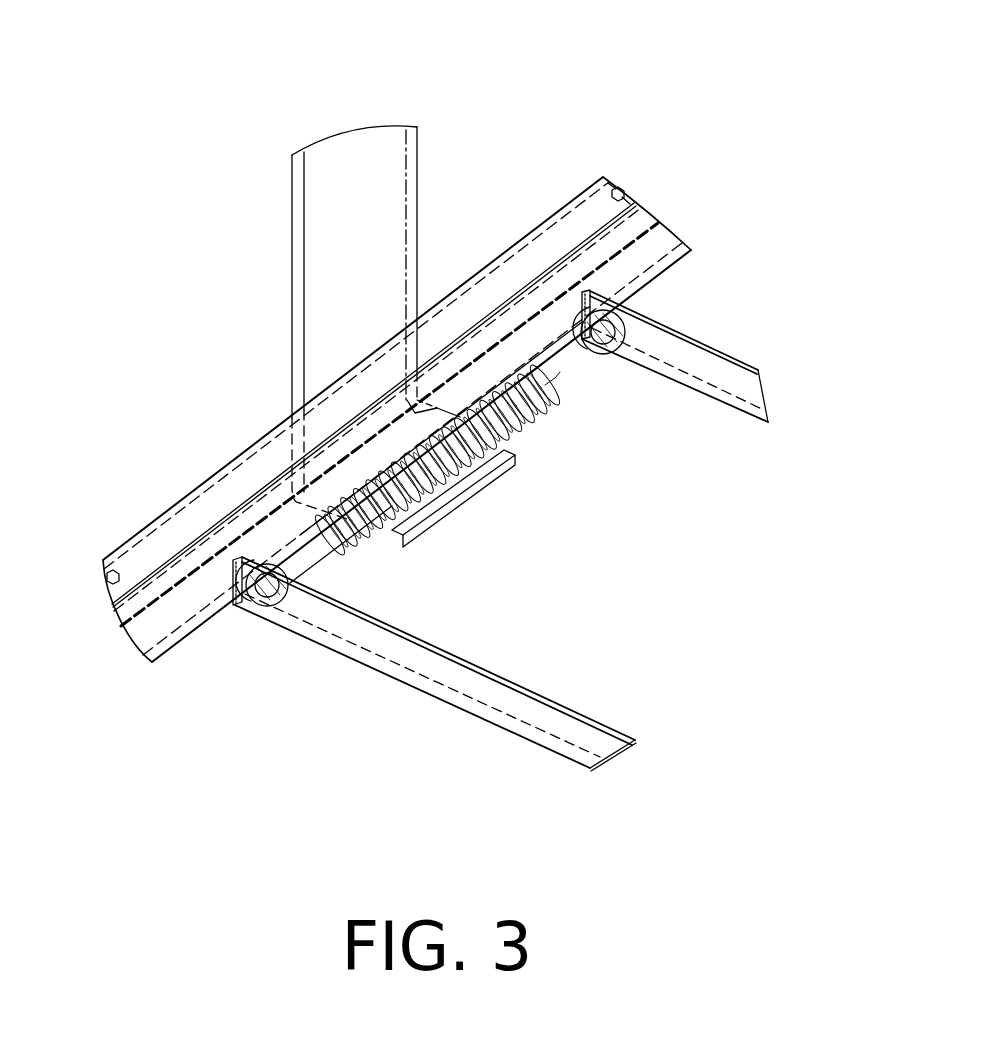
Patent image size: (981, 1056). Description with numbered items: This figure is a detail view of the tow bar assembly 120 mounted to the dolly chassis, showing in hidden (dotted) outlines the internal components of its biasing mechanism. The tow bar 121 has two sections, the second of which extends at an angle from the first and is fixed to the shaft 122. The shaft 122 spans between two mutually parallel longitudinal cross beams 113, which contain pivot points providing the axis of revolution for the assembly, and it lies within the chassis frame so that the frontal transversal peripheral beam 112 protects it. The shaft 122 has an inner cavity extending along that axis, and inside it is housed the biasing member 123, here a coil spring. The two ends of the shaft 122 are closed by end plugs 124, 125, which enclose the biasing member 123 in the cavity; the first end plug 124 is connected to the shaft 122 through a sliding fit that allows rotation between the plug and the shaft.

The transversal peripheral beam 112 is at (218, 478).
The longitudinal cross beam 113 is at (340, 647).
The tow bar assembly 120 is at (391, 341).
The tow bar 121 is at (345, 155).
The shaft 122 is at (457, 483).
The biasing member 123 is at (535, 412).
The first end plug 124 is at (574, 367).
The end plug 125 is at (323, 558).